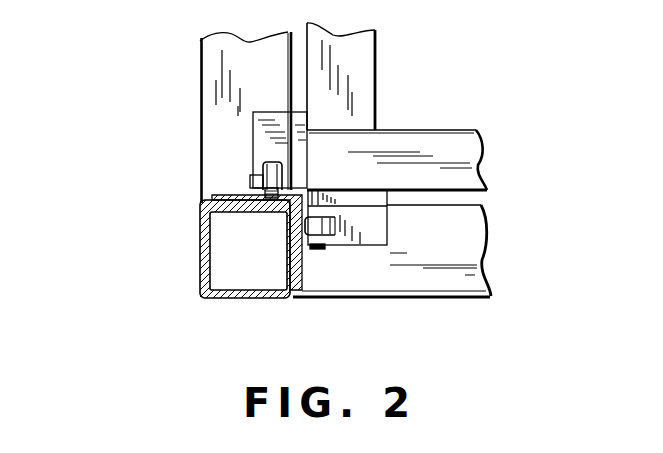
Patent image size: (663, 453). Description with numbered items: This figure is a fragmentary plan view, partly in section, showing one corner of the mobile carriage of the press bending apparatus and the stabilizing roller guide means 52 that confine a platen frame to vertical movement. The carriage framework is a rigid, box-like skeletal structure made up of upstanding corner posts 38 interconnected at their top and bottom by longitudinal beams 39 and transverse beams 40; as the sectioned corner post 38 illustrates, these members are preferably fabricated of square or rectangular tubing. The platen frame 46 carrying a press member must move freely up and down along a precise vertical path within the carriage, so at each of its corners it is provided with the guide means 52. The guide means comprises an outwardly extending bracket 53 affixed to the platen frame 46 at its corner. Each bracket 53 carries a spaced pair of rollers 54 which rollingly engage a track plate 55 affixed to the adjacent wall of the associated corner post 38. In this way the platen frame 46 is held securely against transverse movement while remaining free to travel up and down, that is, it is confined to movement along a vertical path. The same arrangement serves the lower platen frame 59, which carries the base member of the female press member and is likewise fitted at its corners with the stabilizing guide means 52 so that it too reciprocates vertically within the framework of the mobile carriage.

The corner post 38 is at (201, 251).
The longitudinal beam 39 is at (489, 299).
The transverse beam 40 is at (205, 84).
The platen frame 46 is at (423, 106).
The lower platen frame 59 is at (452, 127).
The stabilizing roller guide means 52 is at (376, 254).
The bracket 53 is at (268, 122).
The roller 54 is at (264, 180).
The track plate 55 is at (228, 196).